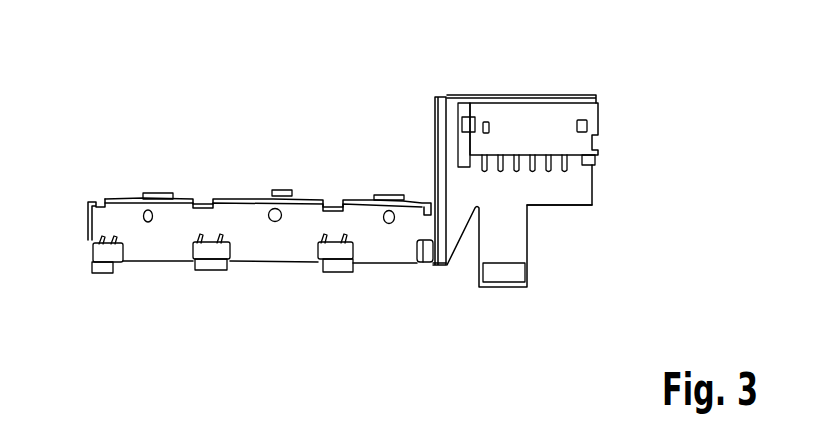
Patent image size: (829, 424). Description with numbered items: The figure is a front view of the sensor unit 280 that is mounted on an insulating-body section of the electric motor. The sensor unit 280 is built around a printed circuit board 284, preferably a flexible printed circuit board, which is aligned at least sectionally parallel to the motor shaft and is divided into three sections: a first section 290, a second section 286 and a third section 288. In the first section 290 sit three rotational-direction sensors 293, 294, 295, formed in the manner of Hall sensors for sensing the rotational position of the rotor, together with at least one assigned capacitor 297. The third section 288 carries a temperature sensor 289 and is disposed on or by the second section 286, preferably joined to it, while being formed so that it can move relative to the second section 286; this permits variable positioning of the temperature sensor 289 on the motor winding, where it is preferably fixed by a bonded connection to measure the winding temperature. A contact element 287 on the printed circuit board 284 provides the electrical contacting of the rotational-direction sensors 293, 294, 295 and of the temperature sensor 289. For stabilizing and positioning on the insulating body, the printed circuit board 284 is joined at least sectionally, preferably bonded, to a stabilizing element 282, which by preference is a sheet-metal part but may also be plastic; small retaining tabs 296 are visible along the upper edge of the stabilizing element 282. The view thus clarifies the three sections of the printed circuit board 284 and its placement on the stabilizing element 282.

The sensor unit 280 is at (323, 82).
The stabilizing element 282 is at (88, 240).
The printed circuit board 284 is at (437, 97).
The second section 286 is at (572, 180).
The contact element 287 is at (567, 138).
The third section 288 is at (507, 237).
The temperature sensor 289 is at (510, 272).
The first section 290 is at (377, 245).
The rotational-direction sensor 293 is at (108, 255).
The rotational-direction sensor 294 is at (214, 248).
The rotational-direction sensor 295 is at (327, 247).
The retaining tabs 296 is at (162, 193).
The capacitor 297 is at (421, 262).